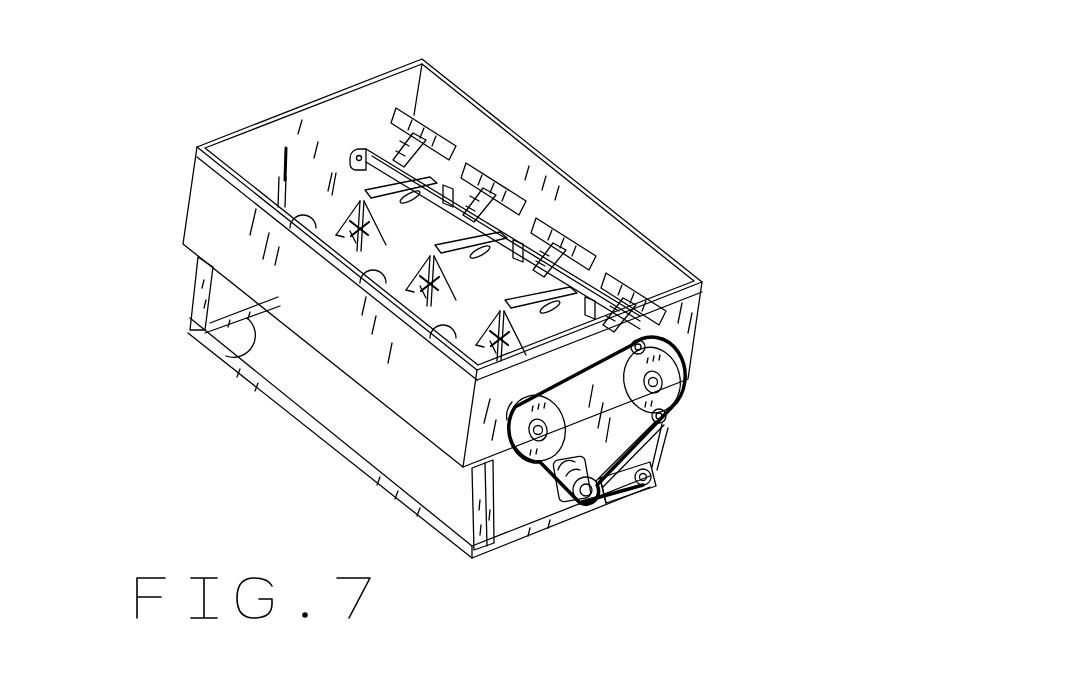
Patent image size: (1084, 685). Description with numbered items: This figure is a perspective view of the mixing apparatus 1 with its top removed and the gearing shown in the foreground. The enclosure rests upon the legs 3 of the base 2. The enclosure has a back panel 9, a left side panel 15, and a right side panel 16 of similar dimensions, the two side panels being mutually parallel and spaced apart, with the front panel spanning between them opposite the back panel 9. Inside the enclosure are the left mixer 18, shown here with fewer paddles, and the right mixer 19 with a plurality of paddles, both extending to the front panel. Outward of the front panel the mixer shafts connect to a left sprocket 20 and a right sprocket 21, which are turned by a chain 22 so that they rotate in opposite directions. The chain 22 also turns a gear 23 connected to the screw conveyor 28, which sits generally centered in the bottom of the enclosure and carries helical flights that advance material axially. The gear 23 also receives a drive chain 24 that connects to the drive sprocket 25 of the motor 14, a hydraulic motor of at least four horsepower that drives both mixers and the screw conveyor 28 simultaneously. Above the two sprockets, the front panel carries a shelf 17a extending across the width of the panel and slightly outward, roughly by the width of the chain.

The apparatus 1 is at (150, 78).
The base 2 is at (225, 350).
The legs 3 is at (196, 300).
The back panel 9 is at (300, 132).
The motor 14 is at (655, 476).
The left side panel 15 is at (478, 147).
The right side panel 16 is at (205, 206).
The shelf 17a is at (693, 270).
The left mixer 18 is at (392, 163).
The right mixer 19 is at (277, 183).
The left sprocket 20 is at (678, 357).
The right sprocket 21 is at (530, 440).
The chain 22 is at (660, 437).
The gear 23 is at (585, 505).
The drive chain 24 is at (613, 497).
The drive sprocket 25 is at (651, 496).
The screw conveyor 28 is at (313, 222).